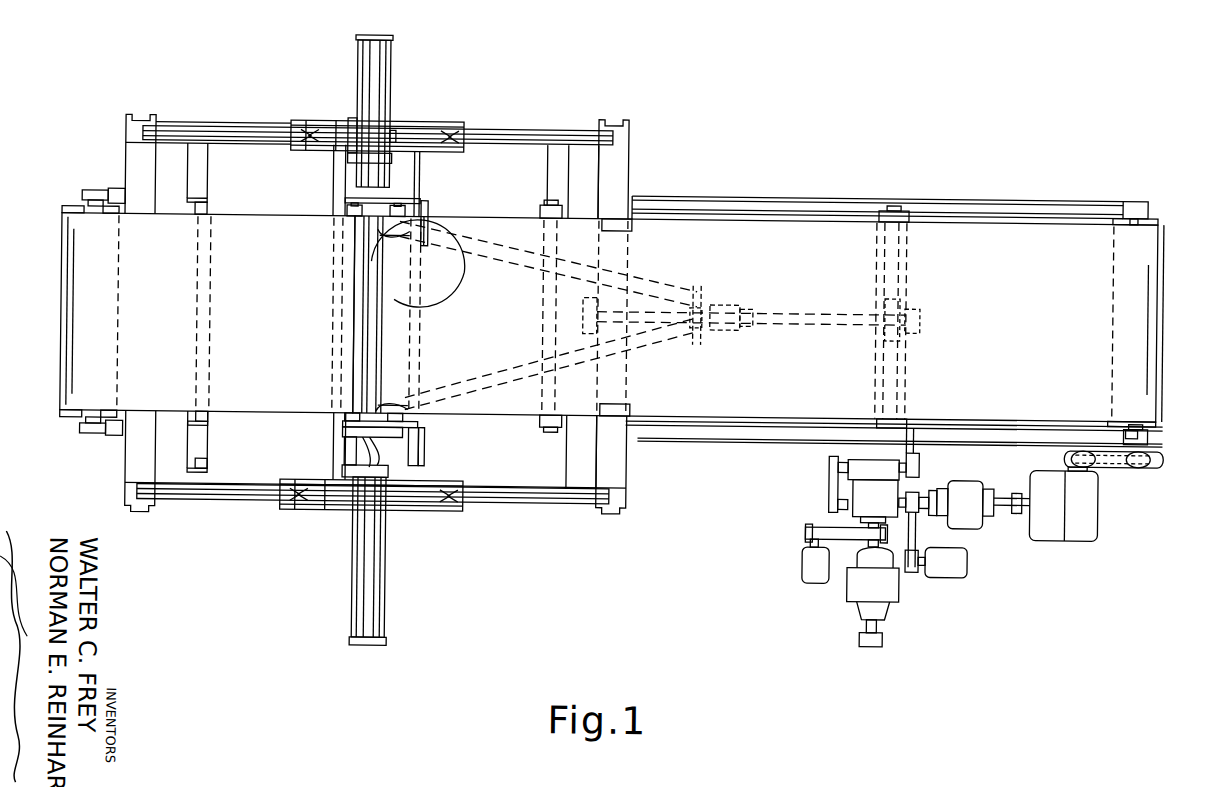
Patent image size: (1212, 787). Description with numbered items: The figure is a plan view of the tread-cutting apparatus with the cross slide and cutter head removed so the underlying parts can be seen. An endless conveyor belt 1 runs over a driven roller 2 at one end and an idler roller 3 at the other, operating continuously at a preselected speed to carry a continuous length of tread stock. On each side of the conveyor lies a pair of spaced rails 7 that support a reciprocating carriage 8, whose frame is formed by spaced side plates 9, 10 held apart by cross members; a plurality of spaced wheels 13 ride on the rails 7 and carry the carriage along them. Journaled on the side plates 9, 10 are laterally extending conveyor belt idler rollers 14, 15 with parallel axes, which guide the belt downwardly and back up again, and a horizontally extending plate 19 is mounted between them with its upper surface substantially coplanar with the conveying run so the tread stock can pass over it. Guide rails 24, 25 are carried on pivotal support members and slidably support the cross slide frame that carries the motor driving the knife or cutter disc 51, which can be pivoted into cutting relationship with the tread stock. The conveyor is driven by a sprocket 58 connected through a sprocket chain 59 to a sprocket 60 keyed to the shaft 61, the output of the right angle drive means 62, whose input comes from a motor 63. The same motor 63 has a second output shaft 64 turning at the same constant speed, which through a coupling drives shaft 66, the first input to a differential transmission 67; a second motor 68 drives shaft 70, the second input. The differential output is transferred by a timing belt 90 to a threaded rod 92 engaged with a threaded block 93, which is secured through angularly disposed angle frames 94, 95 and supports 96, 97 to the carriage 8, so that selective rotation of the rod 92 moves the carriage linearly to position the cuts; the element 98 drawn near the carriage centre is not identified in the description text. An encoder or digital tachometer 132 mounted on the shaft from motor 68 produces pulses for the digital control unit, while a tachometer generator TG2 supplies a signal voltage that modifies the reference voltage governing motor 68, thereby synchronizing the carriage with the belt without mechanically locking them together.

The endless conveyor belt 1 is at (1010, 232).
The driven roller 2 is at (1148, 219).
The idler roller 3 is at (80, 212).
The spaced rails 7 is at (548, 138).
The reciprocating carriage 8 is at (303, 202).
The side plate 9 is at (421, 464).
The side plate 10 is at (385, 214).
The spaced wheels 13 is at (455, 136).
The conveyor belt idler roller 14 is at (348, 424).
The conveyor belt idler roller 15 is at (401, 424).
The horizontally extending plate 19 is at (378, 216).
The guide rail 24 is at (358, 597).
The guide rail 25 is at (388, 602).
The cutter disc 51 is at (456, 290).
The sprocket 58 is at (1153, 439).
The sprocket chain 59 is at (1123, 459).
The sprocket 60 is at (1091, 459).
The shaft 61 is at (1083, 459).
The right angle drive means 62 is at (1053, 517).
The motor 63 is at (962, 494).
The second output shaft 64 is at (926, 489).
The shaft 66 is at (874, 492).
The differential transmission 67 is at (864, 502).
The motor 68 is at (884, 586).
The shaft 70 is at (864, 521).
The timing belt 90 is at (920, 373).
The threaded rod 92 is at (789, 310).
The threaded block 93 is at (723, 300).
The angle frame 94 is at (652, 354).
The angle frame 95 is at (649, 273).
The support 96 is at (432, 417).
The support 97 is at (405, 227).
The shaft 98 is at (421, 342).
The encoder or digital tachometer 132 is at (879, 639).
The tachometer generator TG2 is at (812, 579).